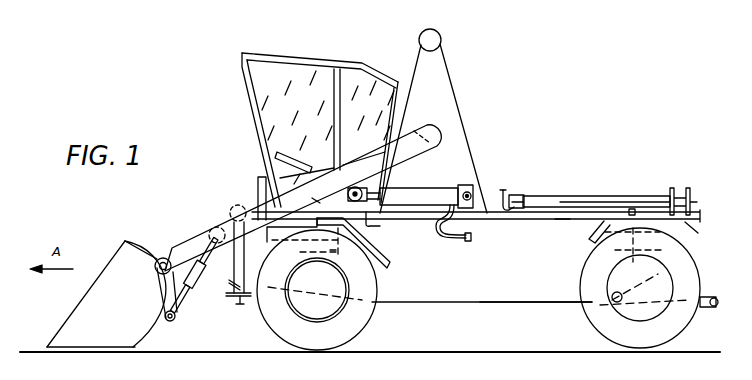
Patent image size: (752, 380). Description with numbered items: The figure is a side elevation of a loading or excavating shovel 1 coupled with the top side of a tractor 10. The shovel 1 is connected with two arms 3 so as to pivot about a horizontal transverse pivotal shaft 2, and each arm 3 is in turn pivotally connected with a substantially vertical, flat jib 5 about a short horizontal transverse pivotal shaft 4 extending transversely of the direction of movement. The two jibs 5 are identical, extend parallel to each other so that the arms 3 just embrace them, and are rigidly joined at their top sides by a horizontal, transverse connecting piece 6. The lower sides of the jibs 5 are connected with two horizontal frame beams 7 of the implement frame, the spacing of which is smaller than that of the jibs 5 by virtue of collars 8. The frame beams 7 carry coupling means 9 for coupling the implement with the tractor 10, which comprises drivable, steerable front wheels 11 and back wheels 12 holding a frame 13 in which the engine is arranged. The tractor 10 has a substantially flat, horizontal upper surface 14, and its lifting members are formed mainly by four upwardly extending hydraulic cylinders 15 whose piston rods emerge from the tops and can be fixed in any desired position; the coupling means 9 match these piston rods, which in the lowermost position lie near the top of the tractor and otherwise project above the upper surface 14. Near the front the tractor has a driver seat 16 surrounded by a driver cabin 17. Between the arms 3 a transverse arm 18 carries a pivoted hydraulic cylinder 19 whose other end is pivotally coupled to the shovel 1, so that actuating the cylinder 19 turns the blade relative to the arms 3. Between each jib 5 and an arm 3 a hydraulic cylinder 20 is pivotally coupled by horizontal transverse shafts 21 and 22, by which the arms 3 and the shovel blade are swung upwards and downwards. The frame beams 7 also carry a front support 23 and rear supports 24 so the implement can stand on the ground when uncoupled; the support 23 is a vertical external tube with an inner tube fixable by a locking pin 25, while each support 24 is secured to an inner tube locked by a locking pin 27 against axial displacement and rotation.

The loading shovel or excavating shovel 1 is at (78, 311).
The horizontal transverse pivotal shaft 2 is at (162, 258).
The arm 3 is at (189, 242).
The horizontal transverse pivotal shaft 4 is at (428, 127).
The jib 5 is at (450, 70).
The connecting piece 6 is at (443, 40).
The frame beam 7 is at (372, 220).
The collar 8 is at (426, 223).
The coupling means 9 is at (631, 208).
The tractor 10 is at (452, 306).
The front wheel 11 is at (272, 326).
The back wheel 12 is at (596, 324).
The frame 13 is at (527, 298).
The upper surface 14 is at (502, 220).
The hydraulic cylinder 15 is at (296, 262).
The driver seat 16 is at (380, 135).
The driver cabin 17 is at (240, 66).
The transverse arm 18 is at (215, 224).
The hydraulic cylinder 19 is at (200, 277).
The hydraulic cylinder 20 is at (445, 186).
The horizontal transverse shaft 21 is at (469, 186).
The horizontal transverse shaft 22 is at (381, 189).
The support 23 is at (238, 298).
The support 24 is at (568, 199).
The locking pin 25 is at (232, 279).
The locking pin 27 is at (512, 194).